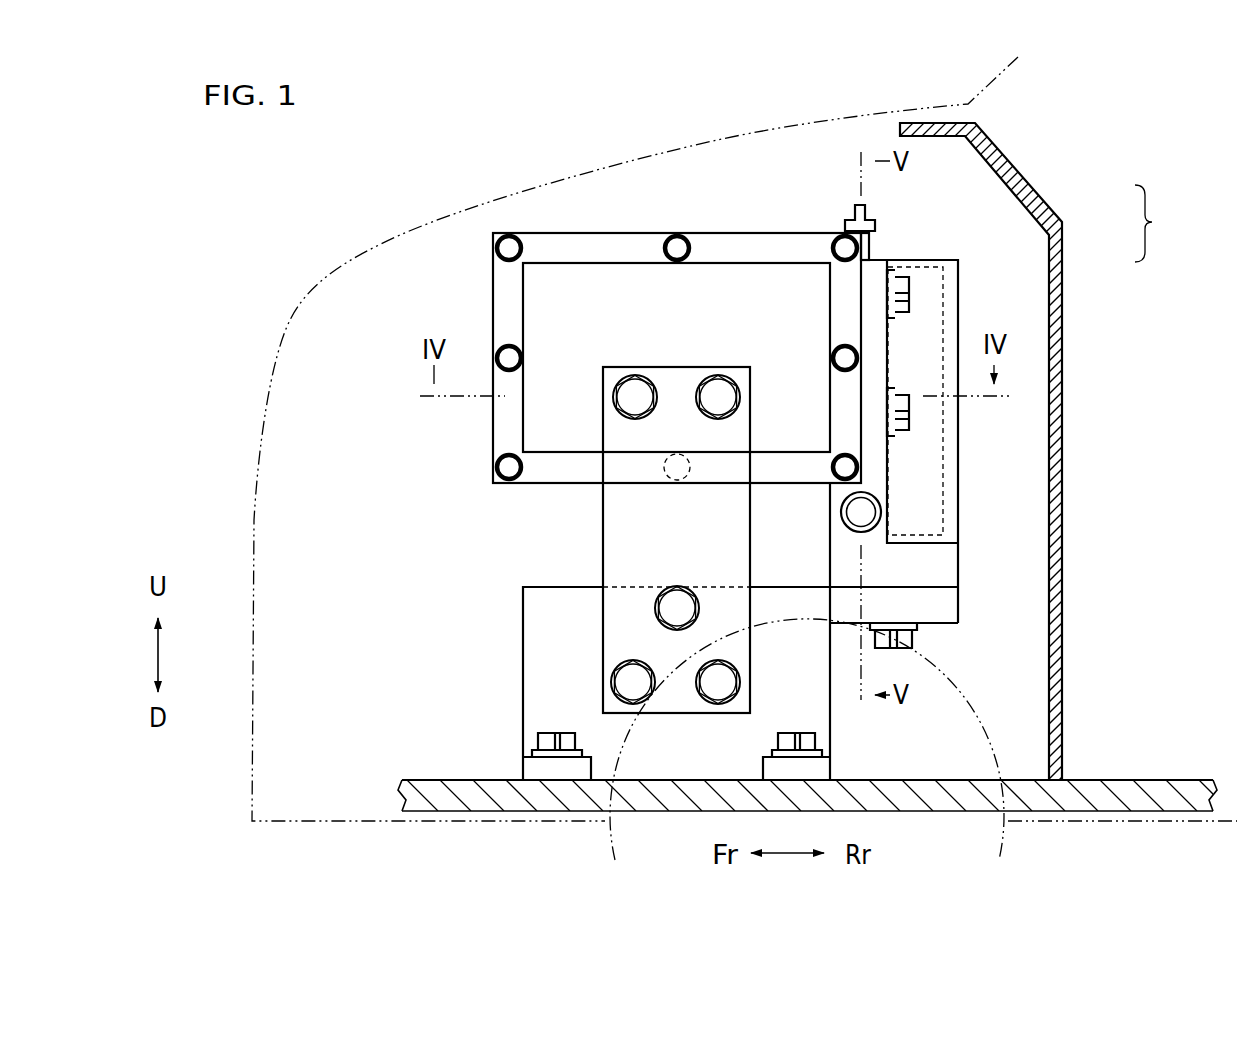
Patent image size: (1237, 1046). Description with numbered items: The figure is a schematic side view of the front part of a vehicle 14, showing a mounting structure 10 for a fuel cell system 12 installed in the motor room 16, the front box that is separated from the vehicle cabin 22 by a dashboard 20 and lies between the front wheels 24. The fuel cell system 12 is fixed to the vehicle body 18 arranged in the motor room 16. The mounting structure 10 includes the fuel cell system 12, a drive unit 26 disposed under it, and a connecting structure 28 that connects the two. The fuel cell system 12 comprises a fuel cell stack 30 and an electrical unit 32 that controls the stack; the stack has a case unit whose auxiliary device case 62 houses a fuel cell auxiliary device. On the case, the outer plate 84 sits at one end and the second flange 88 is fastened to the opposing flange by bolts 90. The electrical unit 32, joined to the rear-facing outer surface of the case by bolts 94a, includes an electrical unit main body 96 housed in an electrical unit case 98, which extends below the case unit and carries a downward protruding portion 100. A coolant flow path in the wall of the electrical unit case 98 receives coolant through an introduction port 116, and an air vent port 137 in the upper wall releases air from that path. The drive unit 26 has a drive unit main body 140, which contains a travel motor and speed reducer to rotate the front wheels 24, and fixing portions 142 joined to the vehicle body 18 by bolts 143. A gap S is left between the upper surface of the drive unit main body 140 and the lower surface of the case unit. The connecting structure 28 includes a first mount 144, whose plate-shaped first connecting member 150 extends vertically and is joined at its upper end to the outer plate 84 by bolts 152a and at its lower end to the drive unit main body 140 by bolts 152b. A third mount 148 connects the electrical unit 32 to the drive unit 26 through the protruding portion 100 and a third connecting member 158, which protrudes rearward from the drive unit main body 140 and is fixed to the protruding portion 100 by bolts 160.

The mounting structure 10 is at (558, 208).
The fuel cell system 12 is at (1157, 223).
The vehicle 14 is at (323, 273).
The motor room 16 is at (715, 178).
The vehicle body 18 is at (432, 790).
The dashboard 20 is at (1055, 393).
The vehicle cabin 22 is at (1126, 760).
The front wheel 24 is at (607, 832).
The drive unit 26 is at (502, 680).
The connecting structure 28 is at (558, 560).
The fuel cell stack 30 is at (880, 238).
The electrical unit 32 is at (972, 265).
The auxiliary device case 62 is at (613, 231).
The outer plate 84 is at (752, 290).
The second flange 88 is at (503, 299).
The bolt 90 is at (845, 356).
The bolt 94a is at (905, 291).
The electrical unit main body 96 is at (943, 497).
The electrical unit case 98 is at (958, 318).
The protruding portion 100 is at (950, 563).
The introduction port 116 is at (841, 512).
The air vent port 137 is at (853, 213).
The drive unit main body 140 is at (533, 631).
The fixing portion 142 is at (532, 768).
The bolt 143 is at (548, 738).
The first mount 144 is at (605, 345).
The third mount 148 is at (988, 636).
The first connecting member 150 is at (615, 430).
The bolt 152a is at (712, 392).
The bolt 152b is at (633, 682).
The third connecting member 158 is at (950, 606).
The bolt 160 is at (915, 638).
The gap S is at (547, 518).